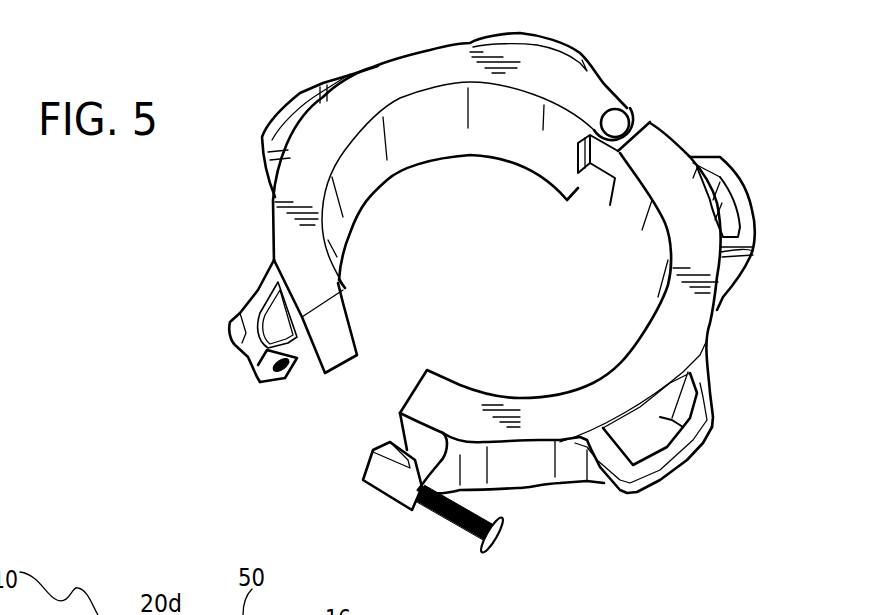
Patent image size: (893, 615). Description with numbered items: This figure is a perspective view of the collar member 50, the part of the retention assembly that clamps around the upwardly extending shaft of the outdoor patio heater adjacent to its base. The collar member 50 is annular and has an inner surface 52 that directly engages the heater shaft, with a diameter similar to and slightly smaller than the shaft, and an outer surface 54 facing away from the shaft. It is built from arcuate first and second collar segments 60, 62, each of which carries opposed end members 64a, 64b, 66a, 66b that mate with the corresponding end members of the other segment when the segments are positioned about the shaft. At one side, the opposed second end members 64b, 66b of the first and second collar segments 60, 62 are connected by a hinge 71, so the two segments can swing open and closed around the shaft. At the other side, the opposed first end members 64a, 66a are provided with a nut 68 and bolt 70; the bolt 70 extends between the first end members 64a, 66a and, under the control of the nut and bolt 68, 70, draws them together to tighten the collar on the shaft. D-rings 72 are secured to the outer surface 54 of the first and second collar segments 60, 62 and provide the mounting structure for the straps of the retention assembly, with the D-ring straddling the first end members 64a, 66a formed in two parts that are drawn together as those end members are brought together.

The collar member 50 is at (500, 307).
The inner surface 52 is at (412, 117).
The outer surface 54 is at (540, 482).
The first collar segment 60 is at (350, 107).
The second collar segment 62 is at (700, 318).
The first end member 64a is at (258, 290).
The second end member 64b is at (627, 106).
The first end member 66a is at (382, 483).
The second end member 66b is at (650, 135).
The nut 68 is at (258, 366).
The bolt 70 is at (496, 548).
The hinge 71 is at (610, 123).
The D-ring 72 is at (673, 470).